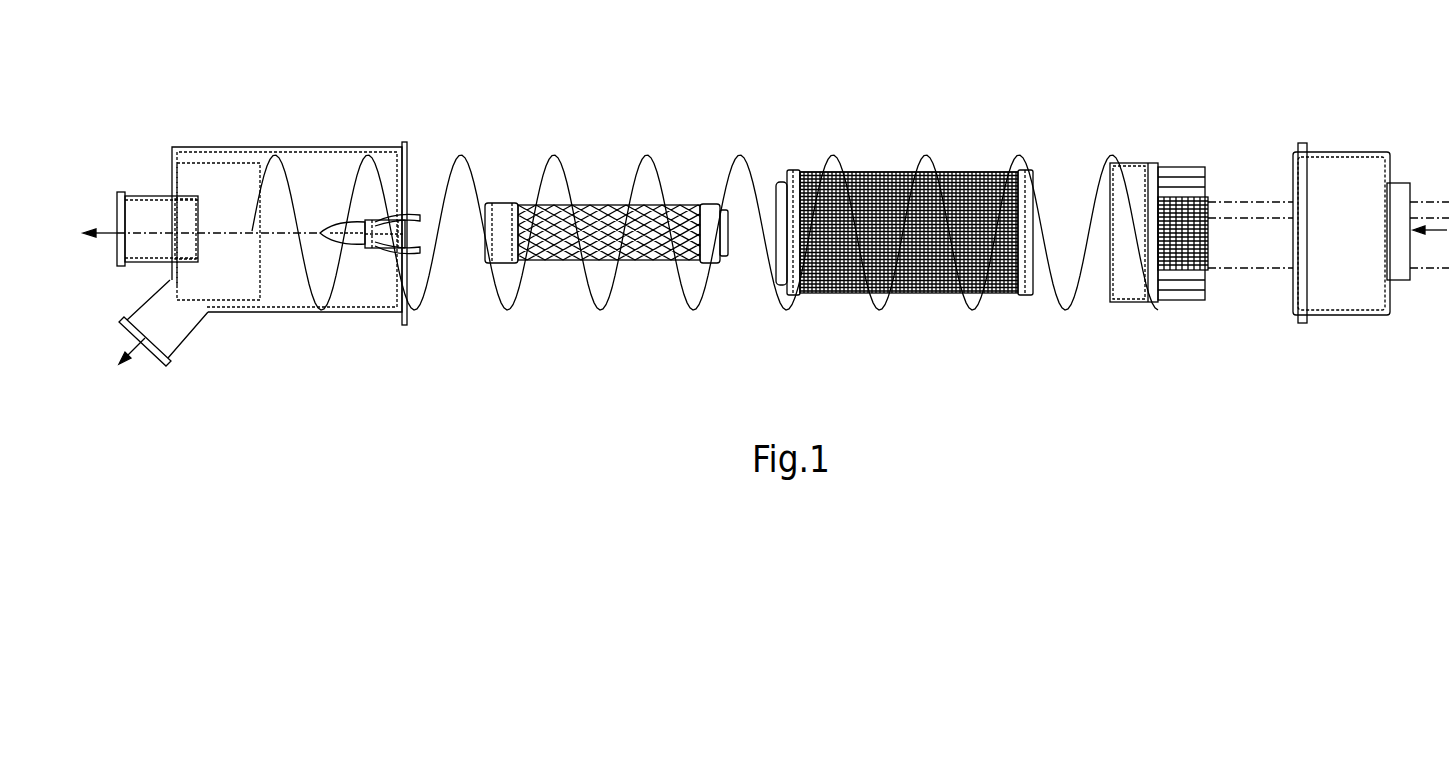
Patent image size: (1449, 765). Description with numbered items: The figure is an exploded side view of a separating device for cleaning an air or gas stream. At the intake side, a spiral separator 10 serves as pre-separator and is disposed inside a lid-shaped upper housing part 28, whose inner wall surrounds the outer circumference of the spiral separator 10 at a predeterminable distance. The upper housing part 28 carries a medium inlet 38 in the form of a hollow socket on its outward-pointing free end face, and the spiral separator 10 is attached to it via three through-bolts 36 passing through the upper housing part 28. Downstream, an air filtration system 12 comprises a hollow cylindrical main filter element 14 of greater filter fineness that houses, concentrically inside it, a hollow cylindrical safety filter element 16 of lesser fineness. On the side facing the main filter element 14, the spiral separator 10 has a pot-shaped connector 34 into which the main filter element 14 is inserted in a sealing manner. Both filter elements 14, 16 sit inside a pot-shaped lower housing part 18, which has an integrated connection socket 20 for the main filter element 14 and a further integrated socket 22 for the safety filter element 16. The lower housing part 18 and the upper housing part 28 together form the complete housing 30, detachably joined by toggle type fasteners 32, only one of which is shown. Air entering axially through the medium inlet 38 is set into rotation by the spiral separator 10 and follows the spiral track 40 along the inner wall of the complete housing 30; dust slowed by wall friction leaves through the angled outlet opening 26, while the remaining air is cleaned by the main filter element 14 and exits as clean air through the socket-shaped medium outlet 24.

The spiral separator 10 is at (1172, 165).
The air filtration system 12 is at (883, 173).
The main filter element 14 is at (957, 177).
The safety filter element 16 is at (688, 195).
The lower housing part 18 is at (307, 150).
The connection socket 20 is at (243, 300).
The further integrated socket 22 is at (184, 197).
The medium outlet 24 is at (140, 205).
The outlet opening 26 is at (152, 362).
The upper housing part 28 is at (1350, 152).
The complete housing 30 is at (362, 148).
The toggle type fastener 32 is at (347, 250).
The pot-shaped connector 34 is at (1135, 162).
The through-bolts 36 is at (1443, 214).
The medium inlet 38 is at (1397, 258).
The spiral track 40 is at (568, 173).